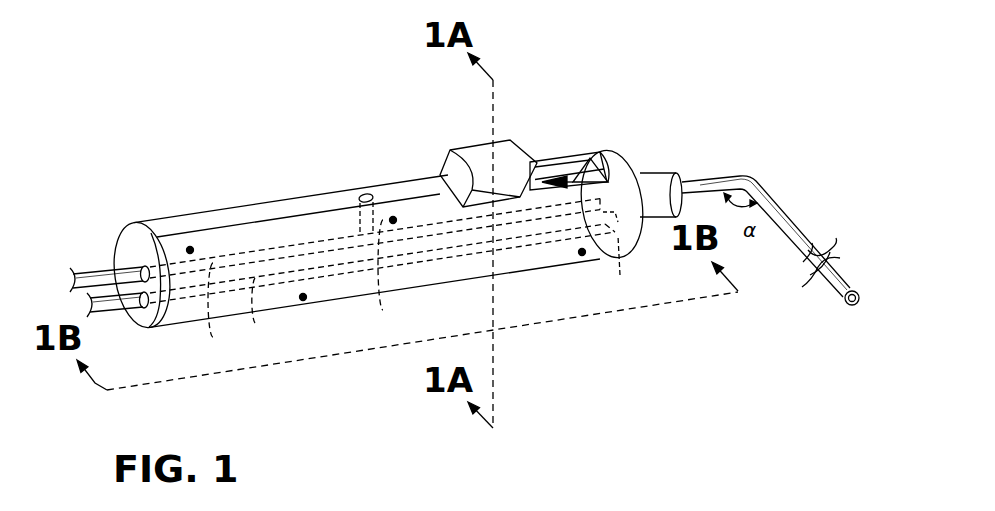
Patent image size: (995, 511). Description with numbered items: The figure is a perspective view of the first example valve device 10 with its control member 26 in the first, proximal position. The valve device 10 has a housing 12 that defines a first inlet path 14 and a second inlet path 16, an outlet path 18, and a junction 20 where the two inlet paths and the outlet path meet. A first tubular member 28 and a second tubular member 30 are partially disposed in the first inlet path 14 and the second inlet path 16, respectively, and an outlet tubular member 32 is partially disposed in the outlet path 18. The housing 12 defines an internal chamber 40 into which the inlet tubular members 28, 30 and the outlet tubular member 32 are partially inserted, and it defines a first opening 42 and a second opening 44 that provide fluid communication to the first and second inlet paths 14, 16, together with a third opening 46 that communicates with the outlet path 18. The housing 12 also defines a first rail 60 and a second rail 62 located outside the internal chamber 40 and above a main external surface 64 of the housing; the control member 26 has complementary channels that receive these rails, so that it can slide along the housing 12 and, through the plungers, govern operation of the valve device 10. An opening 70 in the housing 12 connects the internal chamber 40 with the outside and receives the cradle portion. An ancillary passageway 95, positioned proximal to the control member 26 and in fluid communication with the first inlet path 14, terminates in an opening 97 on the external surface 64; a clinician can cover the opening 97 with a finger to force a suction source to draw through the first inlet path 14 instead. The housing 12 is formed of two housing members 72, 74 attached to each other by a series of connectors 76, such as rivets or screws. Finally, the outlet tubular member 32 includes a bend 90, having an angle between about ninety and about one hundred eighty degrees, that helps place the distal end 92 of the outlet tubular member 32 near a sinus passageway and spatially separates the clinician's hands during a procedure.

The valve device 10 is at (268, 99).
The housing 12 is at (175, 220).
The first inlet path 14 is at (215, 312).
The second inlet path 16 is at (260, 319).
The outlet path 18 is at (633, 200).
The junction 20 is at (623, 256).
The control member 26 is at (477, 160).
The first tubular member 28 is at (78, 272).
The second tubular member 30 is at (108, 312).
The outlet tubular member 32 is at (723, 185).
The internal chamber 40 is at (577, 185).
The first opening 42 is at (139, 270).
The second opening 44 is at (144, 310).
The third opening 46 is at (678, 188).
The first rail 60 is at (548, 162).
The second rail 62 is at (602, 188).
The main external surface 64 is at (260, 236).
The opening 70 is at (567, 174).
The housing member 72 is at (390, 190).
The housing member 74 is at (337, 292).
The connectors 76 is at (190, 248).
The bend 90 is at (763, 170).
The distal end 92 is at (859, 290).
The ancillary passageway 95 is at (382, 276).
The opening 97 is at (360, 195).